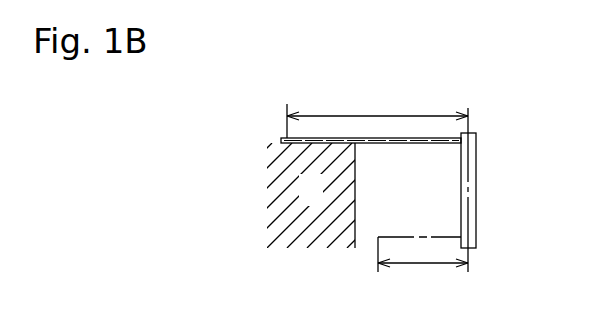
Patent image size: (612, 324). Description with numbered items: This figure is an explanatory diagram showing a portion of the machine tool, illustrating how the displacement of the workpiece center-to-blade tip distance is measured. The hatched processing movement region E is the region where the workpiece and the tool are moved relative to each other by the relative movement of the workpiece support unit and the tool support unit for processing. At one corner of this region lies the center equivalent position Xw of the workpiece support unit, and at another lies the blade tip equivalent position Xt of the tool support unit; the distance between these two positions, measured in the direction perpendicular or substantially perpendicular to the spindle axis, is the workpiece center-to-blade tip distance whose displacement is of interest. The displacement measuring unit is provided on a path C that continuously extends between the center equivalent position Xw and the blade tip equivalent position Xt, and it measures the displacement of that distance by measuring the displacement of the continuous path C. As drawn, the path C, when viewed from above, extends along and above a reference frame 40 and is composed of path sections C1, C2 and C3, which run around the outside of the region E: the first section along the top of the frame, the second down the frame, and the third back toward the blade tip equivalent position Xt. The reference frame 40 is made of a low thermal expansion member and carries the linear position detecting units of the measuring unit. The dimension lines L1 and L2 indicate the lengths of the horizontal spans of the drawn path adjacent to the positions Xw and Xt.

The path C is at (398, 139).
The path section C1 is at (440, 139).
The path section C2 is at (466, 190).
The path section C3 is at (423, 236).
The length L1 is at (372, 115).
The length L2 is at (423, 267).
The center equivalent position of the workpiece support unit Xw is at (287, 138).
The blade tip equivalent position Xt is at (378, 238).
The processing movement region E is at (318, 203).
The reference frame 40 is at (477, 215).